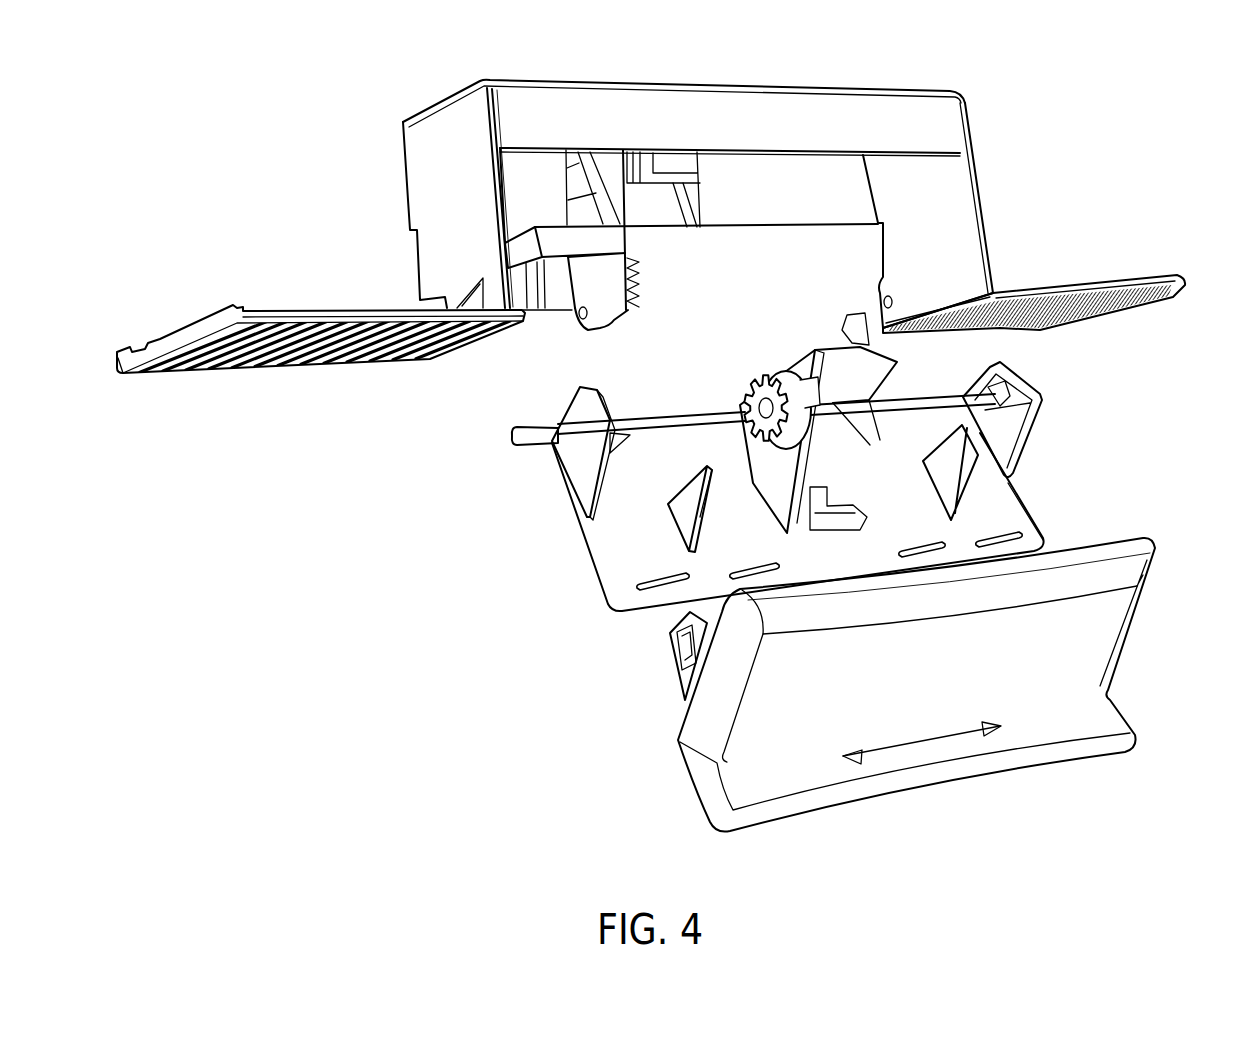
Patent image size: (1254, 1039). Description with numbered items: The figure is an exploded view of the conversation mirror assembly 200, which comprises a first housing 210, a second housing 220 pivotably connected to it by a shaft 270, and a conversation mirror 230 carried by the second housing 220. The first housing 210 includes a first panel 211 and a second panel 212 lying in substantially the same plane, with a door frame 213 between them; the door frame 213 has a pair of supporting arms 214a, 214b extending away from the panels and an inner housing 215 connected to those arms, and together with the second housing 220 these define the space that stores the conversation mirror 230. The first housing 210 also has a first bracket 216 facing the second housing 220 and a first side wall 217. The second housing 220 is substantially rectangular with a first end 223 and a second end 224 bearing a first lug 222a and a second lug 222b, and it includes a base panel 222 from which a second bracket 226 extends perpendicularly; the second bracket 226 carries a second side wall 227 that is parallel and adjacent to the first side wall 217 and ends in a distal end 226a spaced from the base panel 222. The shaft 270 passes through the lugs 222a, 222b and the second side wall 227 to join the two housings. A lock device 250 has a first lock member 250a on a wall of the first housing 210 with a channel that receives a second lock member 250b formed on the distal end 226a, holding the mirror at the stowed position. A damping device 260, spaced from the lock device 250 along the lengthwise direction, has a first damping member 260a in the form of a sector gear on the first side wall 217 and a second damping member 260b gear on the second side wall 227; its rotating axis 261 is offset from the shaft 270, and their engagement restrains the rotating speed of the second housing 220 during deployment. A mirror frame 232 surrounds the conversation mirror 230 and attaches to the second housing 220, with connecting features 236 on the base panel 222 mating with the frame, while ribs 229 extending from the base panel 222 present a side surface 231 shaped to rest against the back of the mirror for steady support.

The conversation mirror assembly 200 is at (1184, 59).
The first housing 210 is at (739, 184).
The first panel 211 is at (1100, 320).
The second panel 212 is at (233, 362).
The door frame 213 is at (830, 86).
The supporting arm 214a is at (475, 206).
The supporting arm 214b is at (988, 242).
The inner housing 215 is at (747, 132).
The first bracket 216 is at (592, 212).
The first side wall 217 is at (617, 293).
The second housing 220 is at (791, 515).
The base panel 222 is at (804, 529).
The first lug 222a is at (578, 412).
The second lug 222b is at (1003, 365).
The first end 223 is at (583, 520).
The second end 224 is at (1010, 503).
The second bracket 226 is at (865, 435).
The distal end 226a is at (905, 346).
The second side wall 227 is at (878, 478).
The rib 229 is at (675, 497).
The conversation mirror 230 is at (947, 709).
The side surface 231 is at (707, 518).
The mirror frame 232 is at (1147, 565).
The connecting feature 236 is at (632, 592).
The lock device 250 is at (749, 248).
The first lock member 250a is at (708, 190).
The second lock member 250b is at (846, 320).
The damping device 260 is at (705, 353).
The first damping member 260a is at (632, 268).
The second damping member 260b is at (757, 383).
The rotating axis 261 is at (745, 412).
The shaft 270 is at (513, 436).